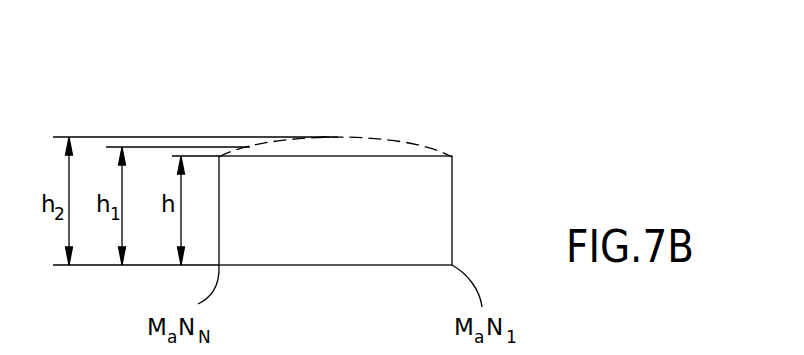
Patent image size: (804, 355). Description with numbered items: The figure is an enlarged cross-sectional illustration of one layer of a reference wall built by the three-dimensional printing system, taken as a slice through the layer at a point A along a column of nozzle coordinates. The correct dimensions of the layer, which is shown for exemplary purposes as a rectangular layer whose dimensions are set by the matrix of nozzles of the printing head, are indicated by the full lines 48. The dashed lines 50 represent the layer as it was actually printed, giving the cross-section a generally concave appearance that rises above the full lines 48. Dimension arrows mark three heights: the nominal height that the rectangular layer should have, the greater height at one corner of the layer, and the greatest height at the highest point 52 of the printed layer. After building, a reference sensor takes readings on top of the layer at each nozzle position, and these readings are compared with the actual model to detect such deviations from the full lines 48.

The full lines 48 is at (400, 157).
The dashed lines 50 is at (390, 139).
The highest point 52 is at (340, 118).